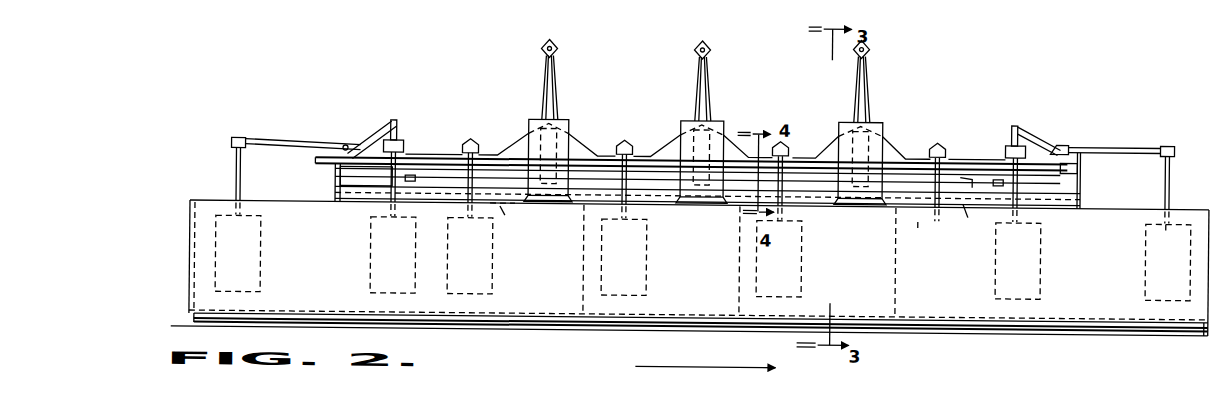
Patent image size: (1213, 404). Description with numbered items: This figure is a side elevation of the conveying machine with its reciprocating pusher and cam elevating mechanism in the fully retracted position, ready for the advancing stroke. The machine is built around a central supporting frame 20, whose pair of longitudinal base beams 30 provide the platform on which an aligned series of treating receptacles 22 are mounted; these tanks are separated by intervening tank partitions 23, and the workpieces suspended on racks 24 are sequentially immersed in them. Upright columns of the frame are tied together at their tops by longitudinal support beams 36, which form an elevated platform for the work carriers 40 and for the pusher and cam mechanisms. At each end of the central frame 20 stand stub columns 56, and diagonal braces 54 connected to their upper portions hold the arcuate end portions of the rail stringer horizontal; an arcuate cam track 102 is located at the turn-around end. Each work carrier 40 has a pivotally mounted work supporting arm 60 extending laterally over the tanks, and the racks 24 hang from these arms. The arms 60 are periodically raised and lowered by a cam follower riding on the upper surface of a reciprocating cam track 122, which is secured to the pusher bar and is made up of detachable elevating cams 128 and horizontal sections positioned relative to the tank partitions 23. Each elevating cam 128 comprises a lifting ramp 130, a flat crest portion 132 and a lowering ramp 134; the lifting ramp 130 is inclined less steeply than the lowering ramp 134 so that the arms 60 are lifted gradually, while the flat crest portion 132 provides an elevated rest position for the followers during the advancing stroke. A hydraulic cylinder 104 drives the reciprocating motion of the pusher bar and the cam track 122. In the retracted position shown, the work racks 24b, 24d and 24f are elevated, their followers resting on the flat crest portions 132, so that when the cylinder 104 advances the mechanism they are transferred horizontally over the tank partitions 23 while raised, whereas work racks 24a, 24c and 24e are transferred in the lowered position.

The central supporting frame 20 is at (663, 207).
The treating receptacles 22 is at (1107, 294).
The tank partitions 23 is at (582, 248).
The racks 24 is at (371, 247).
The work rack 24a is at (480, 284).
The work rack 24b is at (565, 114).
The work rack 24c is at (643, 288).
The work rack 24d is at (710, 123).
The work rack 24e is at (788, 279).
The work rack 24f is at (880, 115).
The longitudinal base beams 30 is at (612, 318).
The longitudinal support beams 36 is at (1077, 191).
The work carriers 40 is at (630, 134).
The diagonal braces 54 is at (377, 126).
The stub columns 56 is at (401, 116).
The work supporting arms 60 is at (1130, 141).
The arcuate cam track 102 is at (1067, 159).
The hydraulic cylinder 104 is at (502, 214).
The reciprocating cam track 122 is at (485, 150).
The elevating cams 128 is at (675, 143).
The lifting ramp 130 is at (507, 141).
The flat crest portion 132 is at (715, 105).
The lowering ramp 134 is at (577, 149).